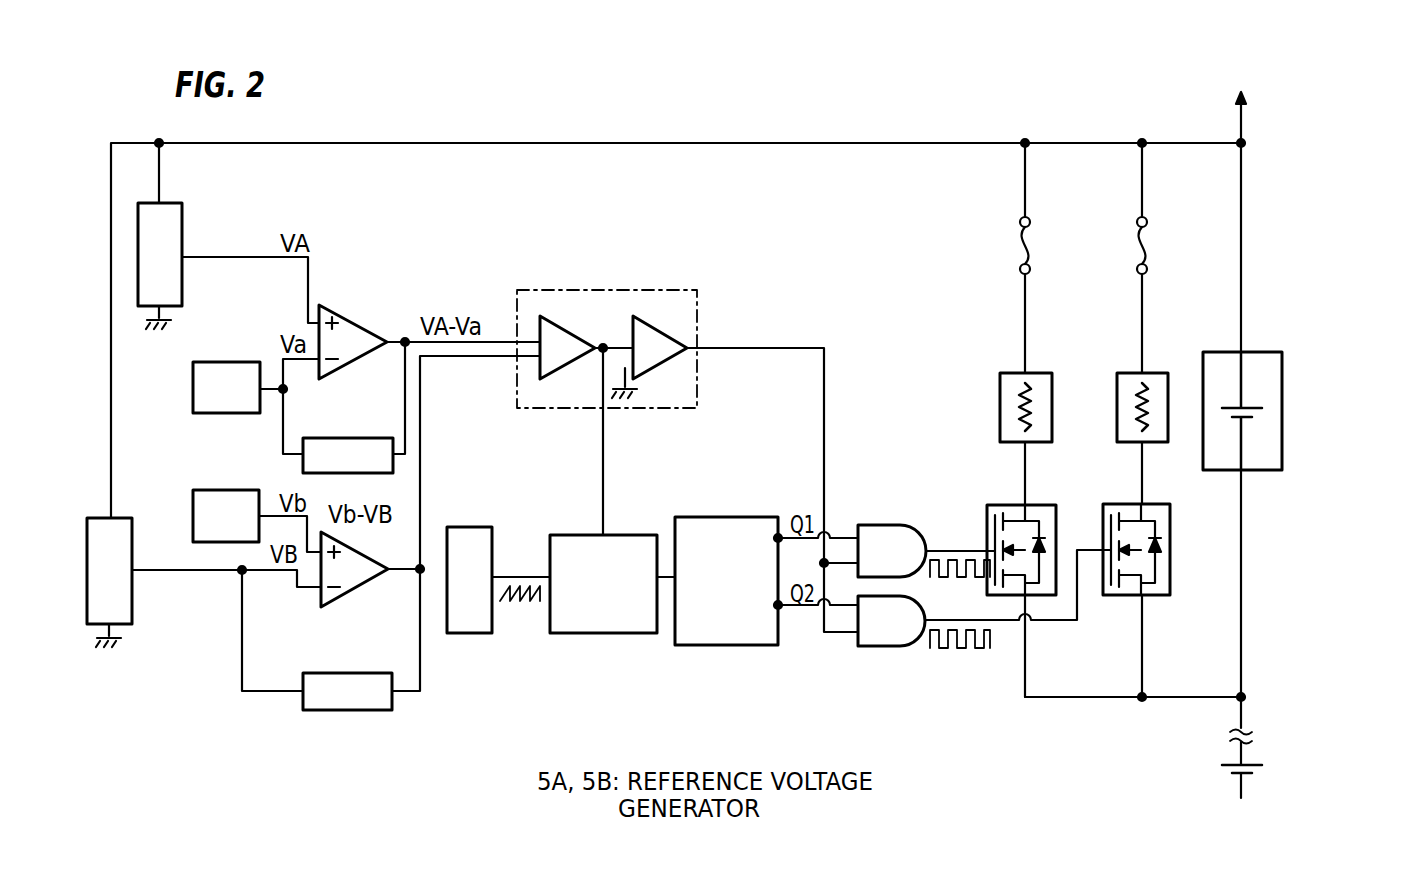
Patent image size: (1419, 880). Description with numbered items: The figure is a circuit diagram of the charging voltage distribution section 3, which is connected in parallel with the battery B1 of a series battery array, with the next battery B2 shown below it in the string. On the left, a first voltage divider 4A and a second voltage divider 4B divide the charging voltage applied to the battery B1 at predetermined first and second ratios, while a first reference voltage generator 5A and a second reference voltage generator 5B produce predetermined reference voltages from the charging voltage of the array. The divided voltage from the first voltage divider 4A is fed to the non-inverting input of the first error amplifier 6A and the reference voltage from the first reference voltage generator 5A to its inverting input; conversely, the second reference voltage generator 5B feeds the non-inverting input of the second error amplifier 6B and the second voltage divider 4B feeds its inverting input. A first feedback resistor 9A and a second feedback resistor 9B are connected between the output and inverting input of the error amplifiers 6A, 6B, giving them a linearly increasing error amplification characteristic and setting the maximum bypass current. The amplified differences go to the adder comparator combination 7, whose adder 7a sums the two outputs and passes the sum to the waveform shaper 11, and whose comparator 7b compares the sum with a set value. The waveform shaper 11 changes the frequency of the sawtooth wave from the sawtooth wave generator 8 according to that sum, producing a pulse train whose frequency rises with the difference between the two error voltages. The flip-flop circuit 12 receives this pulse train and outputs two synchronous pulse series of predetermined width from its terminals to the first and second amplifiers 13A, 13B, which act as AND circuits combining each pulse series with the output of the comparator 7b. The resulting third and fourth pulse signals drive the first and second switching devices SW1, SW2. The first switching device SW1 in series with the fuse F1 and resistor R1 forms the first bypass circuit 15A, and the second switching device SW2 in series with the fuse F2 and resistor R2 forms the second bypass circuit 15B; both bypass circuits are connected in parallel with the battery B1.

The charging voltage distribution section 3 is at (345, 135).
The first voltage divider 4A is at (183, 225).
The second voltage divider 4B is at (140, 622).
The first reference voltage generator 5A is at (193, 388).
The second reference voltage generator 5B is at (193, 518).
The first error amplifier 6A is at (345, 300).
The second error amplifier 6B is at (362, 592).
The adder comparator combination 7 is at (636, 314).
The adder 7a is at (537, 337).
The comparator 7b is at (660, 325).
The sawtooth wave generator 8 is at (470, 633).
The first feedback resistor 9A is at (340, 438).
The second feedback resistor 9B is at (383, 710).
The waveform shaper 11 is at (610, 535).
The flip-flop circuit 12 is at (735, 517).
The first amplifier 13A is at (887, 525).
The second amplifier 13B is at (887, 646).
The first bypass circuit 15A is at (943, 420).
The second bypass circuit 15B is at (1112, 420).
The fuse F1 is at (1015, 245).
The fuse F2 is at (1135, 248).
The resistor R1 is at (1000, 388).
The resistor R2 is at (1117, 388).
The first switching device SW1 is at (1007, 505).
The second switching device SW2 is at (1125, 504).
The battery B1 is at (1258, 352).
The battery B2 is at (1255, 775).